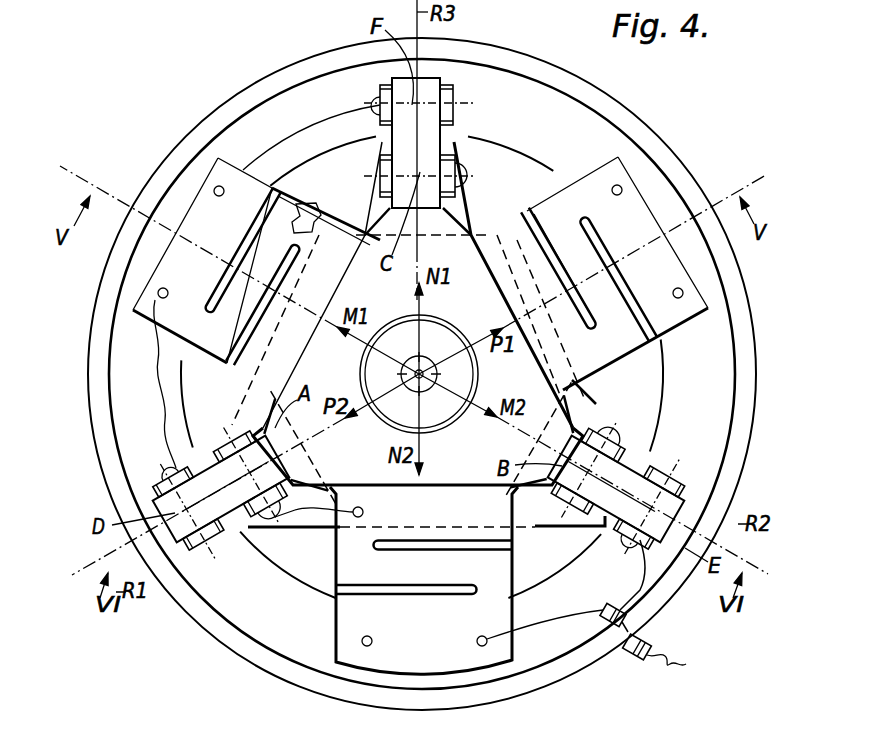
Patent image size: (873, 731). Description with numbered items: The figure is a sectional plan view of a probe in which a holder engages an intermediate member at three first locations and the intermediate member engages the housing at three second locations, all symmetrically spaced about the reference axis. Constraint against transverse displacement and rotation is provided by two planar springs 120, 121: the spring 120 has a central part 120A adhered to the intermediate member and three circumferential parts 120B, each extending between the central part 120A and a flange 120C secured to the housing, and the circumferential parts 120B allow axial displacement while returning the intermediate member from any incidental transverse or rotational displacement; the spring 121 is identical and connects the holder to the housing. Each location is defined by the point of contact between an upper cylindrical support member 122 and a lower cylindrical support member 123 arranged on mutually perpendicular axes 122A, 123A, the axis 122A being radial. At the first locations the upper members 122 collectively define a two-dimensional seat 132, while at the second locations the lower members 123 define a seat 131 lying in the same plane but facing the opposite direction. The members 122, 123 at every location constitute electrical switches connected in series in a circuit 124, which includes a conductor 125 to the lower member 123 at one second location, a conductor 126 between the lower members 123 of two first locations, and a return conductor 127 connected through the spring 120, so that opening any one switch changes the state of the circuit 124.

The planar spring 120 is at (210, 264).
The central part 120A is at (163, 368).
The circumferential parts 120B is at (240, 296).
The flange 120C is at (155, 273).
The planar spring 121 is at (312, 205).
The upper cylindrical support member 122 is at (705, 492).
The axis of upper member 122A is at (655, 622).
The lower cylindrical support member 123 is at (617, 475).
The axis of lower member 123A is at (651, 504).
The circuit 124 is at (670, 670).
The conductor 125 is at (648, 448).
The conductor 126 is at (608, 388).
The return conductor 127 is at (552, 622).
The seat 131 is at (441, 126).
The seat 132 is at (445, 145).